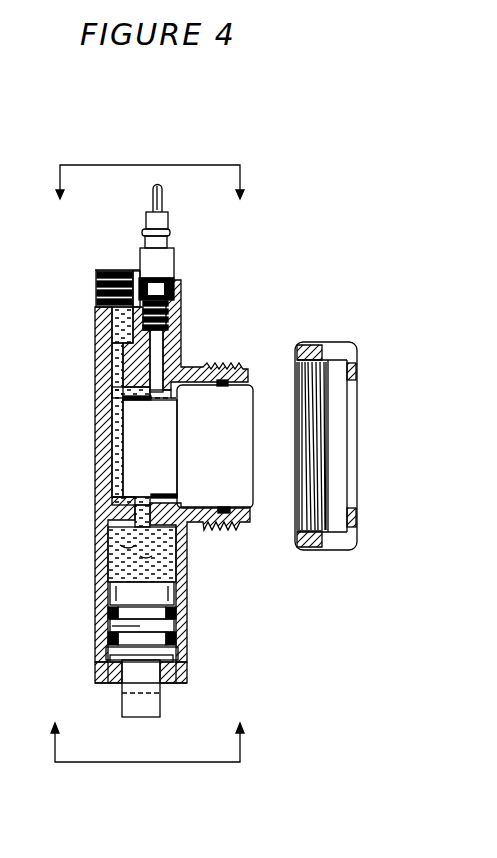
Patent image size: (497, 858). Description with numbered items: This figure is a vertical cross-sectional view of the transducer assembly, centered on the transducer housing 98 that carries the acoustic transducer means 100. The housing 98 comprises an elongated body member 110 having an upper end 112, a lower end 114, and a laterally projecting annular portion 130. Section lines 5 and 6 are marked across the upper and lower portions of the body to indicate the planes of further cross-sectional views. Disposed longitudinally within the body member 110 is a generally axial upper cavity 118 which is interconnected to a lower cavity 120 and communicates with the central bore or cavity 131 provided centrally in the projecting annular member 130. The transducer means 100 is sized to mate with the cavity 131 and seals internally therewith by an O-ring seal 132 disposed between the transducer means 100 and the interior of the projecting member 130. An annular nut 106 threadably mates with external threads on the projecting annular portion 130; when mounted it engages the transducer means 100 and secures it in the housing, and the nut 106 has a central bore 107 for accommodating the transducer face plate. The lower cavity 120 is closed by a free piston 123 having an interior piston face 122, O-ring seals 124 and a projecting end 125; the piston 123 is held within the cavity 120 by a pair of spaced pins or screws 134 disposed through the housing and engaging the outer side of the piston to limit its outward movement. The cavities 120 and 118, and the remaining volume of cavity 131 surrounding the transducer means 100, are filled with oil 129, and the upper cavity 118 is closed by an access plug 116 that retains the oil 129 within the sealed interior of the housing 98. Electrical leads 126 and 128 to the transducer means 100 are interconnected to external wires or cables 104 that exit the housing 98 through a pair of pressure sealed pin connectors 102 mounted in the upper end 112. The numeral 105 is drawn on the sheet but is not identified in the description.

The section line 5- 5 is at (150, 186).
The section line 6- 6 is at (146, 731).
The transducer housing 98 is at (186, 278).
The acoustic transducer means 100 is at (270, 386).
The pressure sealed pin connector 102 is at (170, 222).
The external wires or cables 104 is at (153, 184).
The coil housing 105 is at (294, 372).
The annular nut 106 is at (351, 342).
The central bore 107 is at (344, 420).
The elongated body member 110 is at (177, 590).
The upper end 112 is at (97, 275).
The lower end 114 is at (183, 684).
The access plug 116 is at (118, 270).
The upper cavity 118 is at (114, 332).
The lower cavity 120 is at (114, 562).
The interior piston face 122 is at (120, 600).
The free piston 123 is at (125, 627).
The O-ring seals 124 is at (173, 613).
The projecting end 125 is at (137, 698).
The electrical lead 126 is at (183, 345).
The electrical lead 128 is at (116, 378).
The oil 129 is at (120, 547).
The projecting annular portion 130 is at (223, 360).
The central bore or cavity 131 is at (262, 522).
The O-ring seal 132 is at (258, 385).
The pins or screws 134 is at (177, 662).